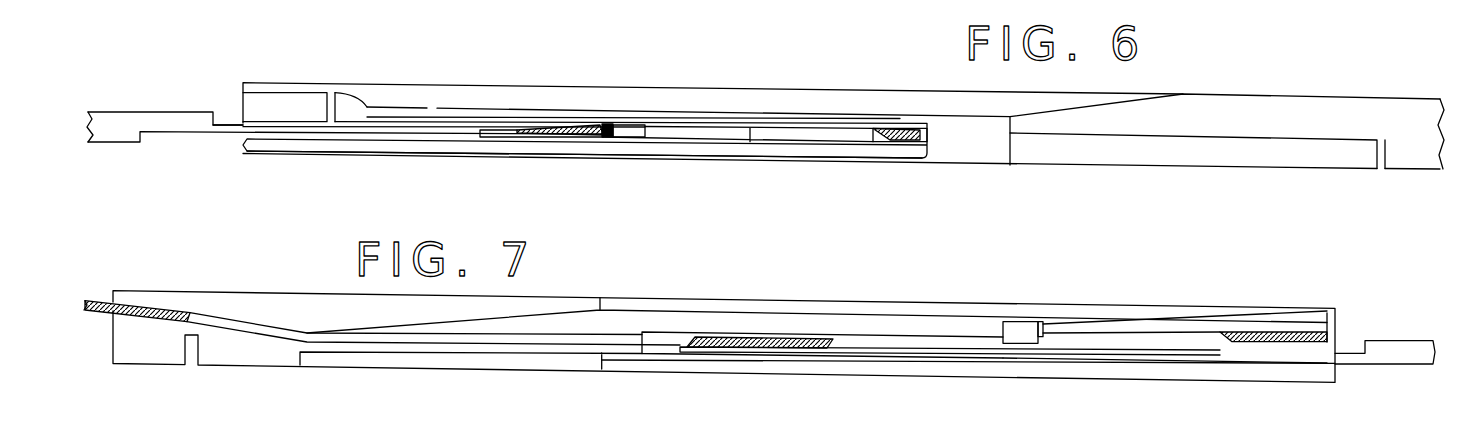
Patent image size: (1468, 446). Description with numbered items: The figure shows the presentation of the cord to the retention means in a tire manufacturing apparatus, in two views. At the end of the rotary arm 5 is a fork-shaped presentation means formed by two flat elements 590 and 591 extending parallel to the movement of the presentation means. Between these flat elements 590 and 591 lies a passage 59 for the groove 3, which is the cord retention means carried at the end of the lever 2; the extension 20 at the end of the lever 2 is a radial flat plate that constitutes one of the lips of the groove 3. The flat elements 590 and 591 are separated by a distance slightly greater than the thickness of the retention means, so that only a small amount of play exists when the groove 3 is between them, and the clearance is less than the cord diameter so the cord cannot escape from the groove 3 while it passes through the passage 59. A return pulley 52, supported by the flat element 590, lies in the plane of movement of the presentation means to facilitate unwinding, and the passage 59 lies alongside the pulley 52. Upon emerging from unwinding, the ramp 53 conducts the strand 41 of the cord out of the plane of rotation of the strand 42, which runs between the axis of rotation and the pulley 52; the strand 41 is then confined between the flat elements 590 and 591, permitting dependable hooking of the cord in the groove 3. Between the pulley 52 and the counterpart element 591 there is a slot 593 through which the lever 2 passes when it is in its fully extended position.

In FIG. 6, the lever 2 is at (140, 112).
In FIG. 7, the lever 2 is at (1390, 322).
In FIG. 6, the extension 20 is at (229, 125).
In FIG. 6, the groove 3 is at (800, 135).
In FIG. 7, the groove 3 is at (873, 360).
In FIG. 6, the rotary arm 5 is at (1410, 115).
In FIG. 7, the rotary arm 5 is at (210, 300).
In FIG. 6, the strand 41 is at (578, 125).
In FIG. 7, the strand 41 is at (1113, 345).
In FIG. 7, the strand 42 is at (1043, 320).
In FIG. 7, the return pulley 52 is at (1112, 325).
In FIG. 7, the ramp 53 is at (1003, 330).
In FIG. 6, the passage 59 is at (895, 129).
In FIG. 7, the passage 59 is at (670, 332).
In FIG. 6, the flat element 590 is at (722, 75).
In FIG. 7, the flat element 590 is at (832, 328).
In FIG. 6, the flat element 591 is at (679, 153).
In FIG. 7, the flat element 591 is at (913, 365).
In FIG. 6, the slot 593 is at (240, 140).